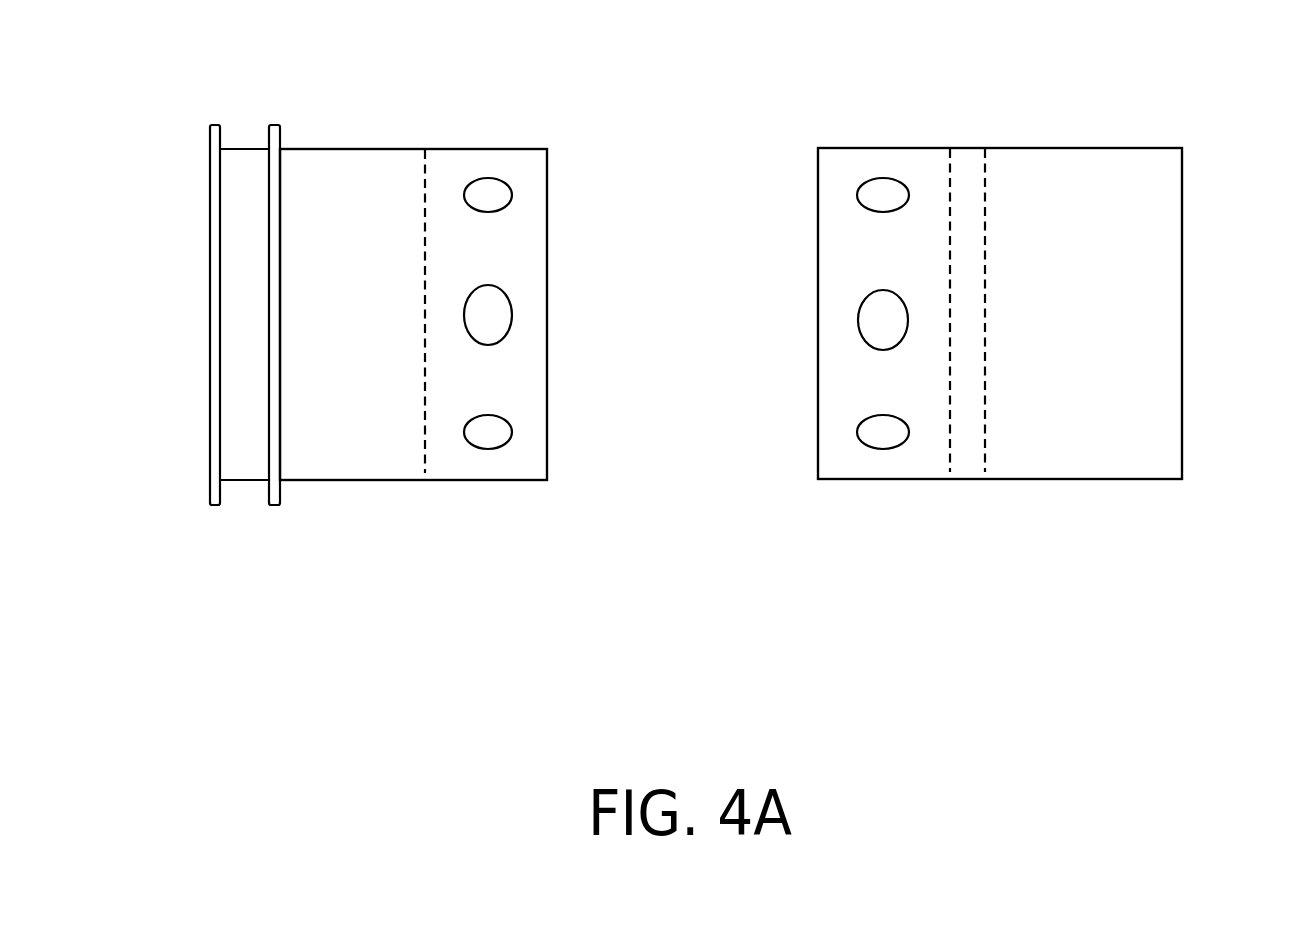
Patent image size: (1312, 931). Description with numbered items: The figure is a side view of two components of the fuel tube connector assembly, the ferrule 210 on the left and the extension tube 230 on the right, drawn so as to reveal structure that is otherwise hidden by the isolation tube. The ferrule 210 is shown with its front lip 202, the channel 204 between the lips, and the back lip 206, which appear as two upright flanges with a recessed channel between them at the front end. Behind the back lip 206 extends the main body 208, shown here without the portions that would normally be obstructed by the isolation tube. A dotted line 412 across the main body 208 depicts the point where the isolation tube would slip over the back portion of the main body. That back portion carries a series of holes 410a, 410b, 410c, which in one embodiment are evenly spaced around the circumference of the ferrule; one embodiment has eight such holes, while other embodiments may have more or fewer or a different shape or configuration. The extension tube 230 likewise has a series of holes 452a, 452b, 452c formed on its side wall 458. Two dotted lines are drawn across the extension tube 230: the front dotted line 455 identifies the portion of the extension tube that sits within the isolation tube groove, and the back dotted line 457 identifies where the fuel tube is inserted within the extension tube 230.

The front lip 202 is at (210, 127).
The channel 204 is at (245, 148).
The back lip 206 is at (280, 130).
The main body 208 is at (347, 152).
The ferrule 210 is at (382, 432).
The dotted line 412 is at (425, 288).
The hole 410a is at (513, 197).
The hole 410b is at (518, 322).
The hole 410c is at (513, 440).
The extension tube 230 is at (922, 450).
The front dotted line 455 is at (950, 200).
The back dotted line 457 is at (987, 283).
The side wall 458 is at (1107, 301).
The hole 452a is at (858, 203).
The hole 452b is at (857, 328).
The hole 452c is at (858, 438).